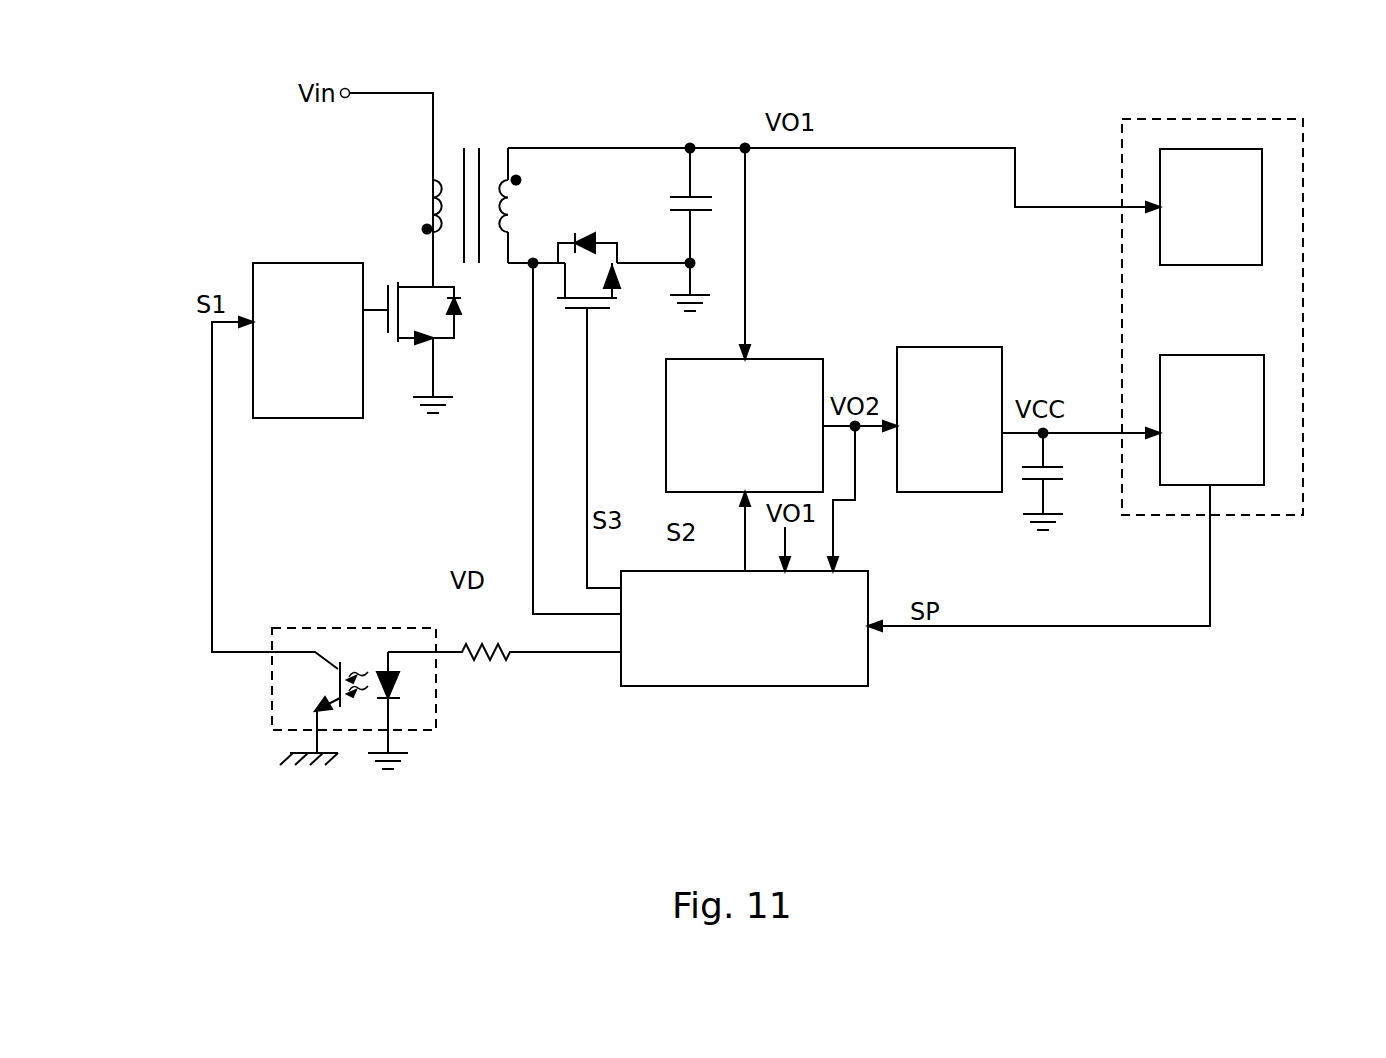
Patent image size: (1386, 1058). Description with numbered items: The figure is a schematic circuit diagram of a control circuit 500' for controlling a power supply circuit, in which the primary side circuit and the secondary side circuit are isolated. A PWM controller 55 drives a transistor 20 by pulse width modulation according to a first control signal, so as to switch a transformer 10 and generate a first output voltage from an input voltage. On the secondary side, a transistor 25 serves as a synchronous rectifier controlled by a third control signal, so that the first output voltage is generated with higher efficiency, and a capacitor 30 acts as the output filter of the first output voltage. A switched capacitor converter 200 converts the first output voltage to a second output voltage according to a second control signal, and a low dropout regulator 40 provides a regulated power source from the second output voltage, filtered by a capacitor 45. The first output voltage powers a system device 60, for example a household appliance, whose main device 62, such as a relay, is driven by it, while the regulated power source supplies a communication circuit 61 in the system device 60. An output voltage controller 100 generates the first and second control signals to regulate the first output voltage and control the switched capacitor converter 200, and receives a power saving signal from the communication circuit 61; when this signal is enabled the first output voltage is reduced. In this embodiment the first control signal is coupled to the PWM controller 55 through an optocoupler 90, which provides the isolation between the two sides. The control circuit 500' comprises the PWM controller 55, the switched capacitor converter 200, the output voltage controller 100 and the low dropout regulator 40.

The transformer 10 is at (463, 142).
The transistor 20 is at (414, 278).
The transistor 25 is at (585, 232).
The capacitor 30 is at (682, 229).
The low dropout regulator 40 is at (949, 419).
The capacitor 45 is at (1060, 481).
The PWM controller 55 is at (308, 340).
The system device 60 is at (1210, 119).
The communication circuit 61 is at (1212, 420).
The main device 62 is at (1211, 207).
The optocoupler 90 is at (380, 628).
The output voltage controller 100 is at (744, 628).
The switched capacitor converter 200 is at (744, 425).
The control circuit 500' is at (287, 859).